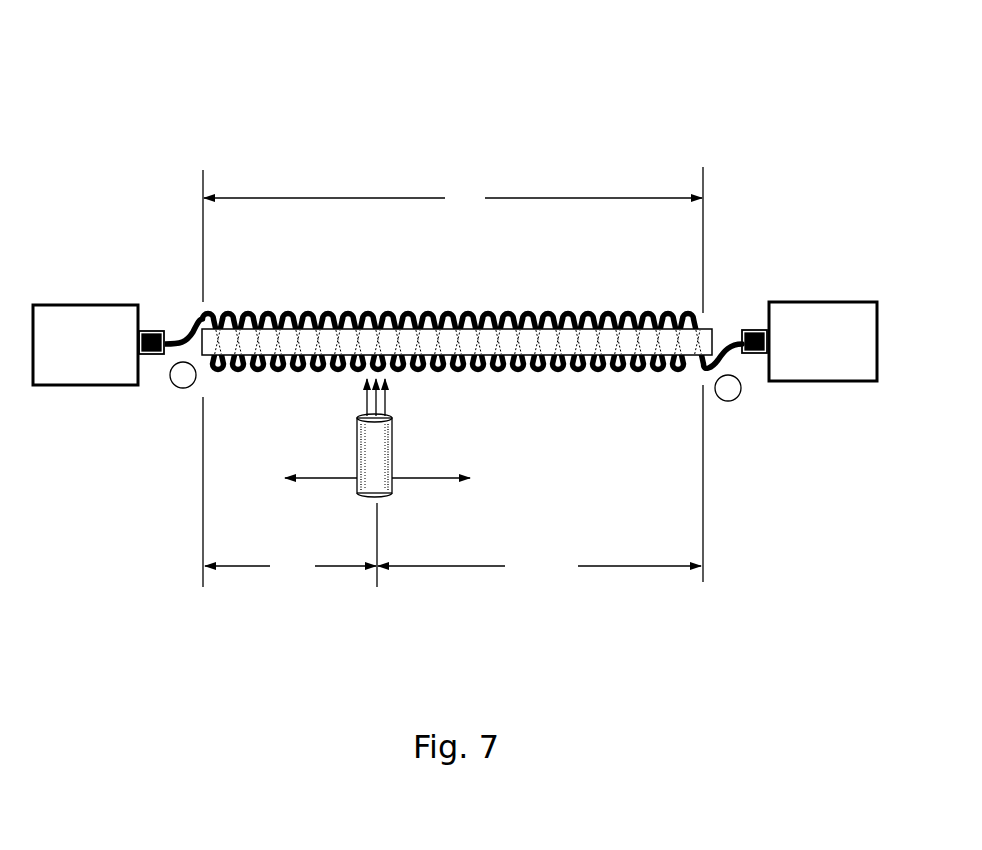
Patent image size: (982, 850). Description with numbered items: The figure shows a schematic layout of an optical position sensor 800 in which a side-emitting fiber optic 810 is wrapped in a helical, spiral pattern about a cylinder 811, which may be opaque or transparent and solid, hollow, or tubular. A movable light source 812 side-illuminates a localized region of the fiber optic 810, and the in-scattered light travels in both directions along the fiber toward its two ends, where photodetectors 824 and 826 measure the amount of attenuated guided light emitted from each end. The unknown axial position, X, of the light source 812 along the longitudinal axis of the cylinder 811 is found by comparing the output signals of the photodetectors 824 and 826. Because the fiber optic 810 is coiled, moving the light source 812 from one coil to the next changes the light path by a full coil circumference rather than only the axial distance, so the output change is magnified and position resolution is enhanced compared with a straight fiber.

The optical position sensor 800 is at (106, 94).
The side-emitting fiber optic 810 is at (478, 300).
The cylinder 811 is at (709, 323).
The movable light source 812 is at (403, 442).
The photodetector 824 is at (88, 390).
The photodetector 826 is at (818, 388).